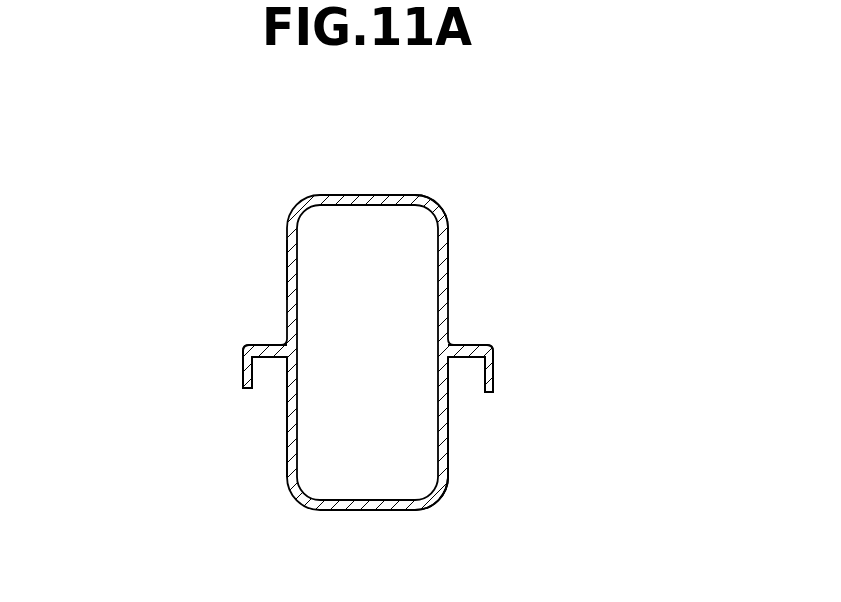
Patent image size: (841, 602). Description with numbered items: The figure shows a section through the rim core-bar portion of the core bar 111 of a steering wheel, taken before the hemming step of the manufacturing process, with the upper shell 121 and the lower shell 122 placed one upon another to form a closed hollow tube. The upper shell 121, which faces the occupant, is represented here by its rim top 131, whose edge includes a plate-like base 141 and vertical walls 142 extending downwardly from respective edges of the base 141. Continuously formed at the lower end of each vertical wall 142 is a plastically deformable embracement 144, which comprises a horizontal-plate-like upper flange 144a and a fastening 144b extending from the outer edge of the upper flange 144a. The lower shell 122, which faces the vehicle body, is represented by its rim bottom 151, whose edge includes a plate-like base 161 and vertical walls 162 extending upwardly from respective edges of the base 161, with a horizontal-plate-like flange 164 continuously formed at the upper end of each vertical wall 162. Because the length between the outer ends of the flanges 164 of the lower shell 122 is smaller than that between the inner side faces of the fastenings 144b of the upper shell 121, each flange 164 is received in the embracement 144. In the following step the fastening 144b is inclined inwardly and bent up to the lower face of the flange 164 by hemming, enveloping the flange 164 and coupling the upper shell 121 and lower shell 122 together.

The core bar 111 is at (250, 188).
The plate-like base 141 is at (371, 196).
The rim top 131 is at (407, 195).
The upper shell 121 is at (450, 234).
The vertical wall 142 is at (450, 289).
The embracement 144 is at (135, 283).
The upper flange 144a is at (262, 343).
The fastening 144b is at (243, 378).
The flange 164 is at (268, 358).
The vertical wall 162 is at (287, 455).
The lower shell 122 is at (447, 486).
The rim bottom 151 is at (440, 503).
The plate-like base 161 is at (366, 510).